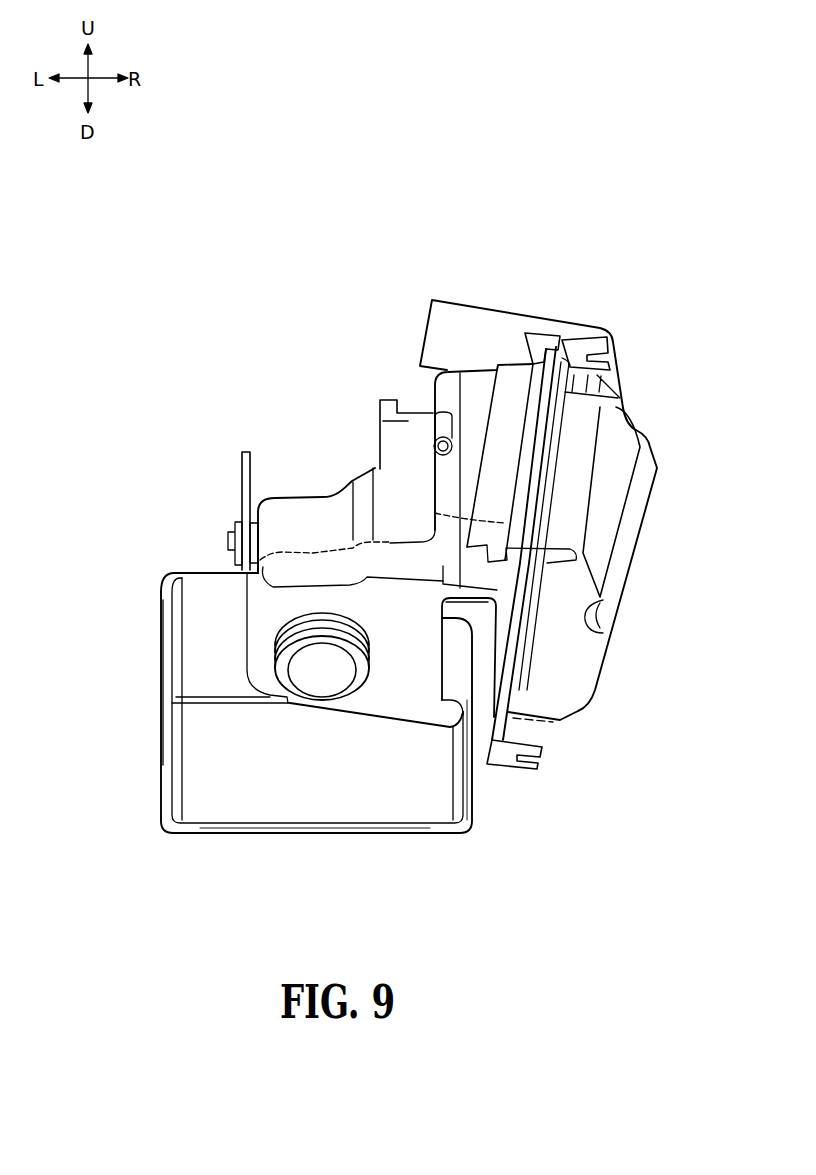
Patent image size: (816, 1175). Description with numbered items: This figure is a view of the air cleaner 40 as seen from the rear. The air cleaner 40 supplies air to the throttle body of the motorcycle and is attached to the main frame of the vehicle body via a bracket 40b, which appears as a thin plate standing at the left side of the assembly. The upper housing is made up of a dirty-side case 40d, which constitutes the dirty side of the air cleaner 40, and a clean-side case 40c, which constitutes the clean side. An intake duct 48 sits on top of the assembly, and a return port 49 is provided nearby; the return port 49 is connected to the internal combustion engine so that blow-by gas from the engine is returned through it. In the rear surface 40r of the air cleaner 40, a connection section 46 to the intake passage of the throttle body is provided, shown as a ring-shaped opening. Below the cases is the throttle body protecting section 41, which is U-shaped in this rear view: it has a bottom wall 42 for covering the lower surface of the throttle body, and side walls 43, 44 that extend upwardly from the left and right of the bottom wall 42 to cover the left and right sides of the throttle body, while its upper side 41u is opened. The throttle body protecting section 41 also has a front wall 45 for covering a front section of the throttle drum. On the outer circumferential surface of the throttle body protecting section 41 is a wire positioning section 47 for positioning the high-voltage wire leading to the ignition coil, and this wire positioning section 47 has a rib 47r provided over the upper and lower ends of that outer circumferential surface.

The air cleaner 40 is at (232, 347).
The bracket 40b is at (241, 452).
The clean-side case 40c is at (348, 482).
The dirty-side case 40d is at (650, 513).
The rear surface 40r is at (393, 670).
The throttle body protecting section 41 is at (158, 827).
The upper side 41u is at (198, 650).
The bottom wall 42 is at (323, 833).
The side wall 43 is at (165, 752).
The side wall 44 is at (470, 792).
The front wall 45 is at (208, 600).
The connection section 46 is at (313, 678).
The wire positioning section 47 is at (511, 633).
The rib 47r is at (487, 667).
The intake duct 48 is at (455, 318).
The return port 49 is at (435, 427).